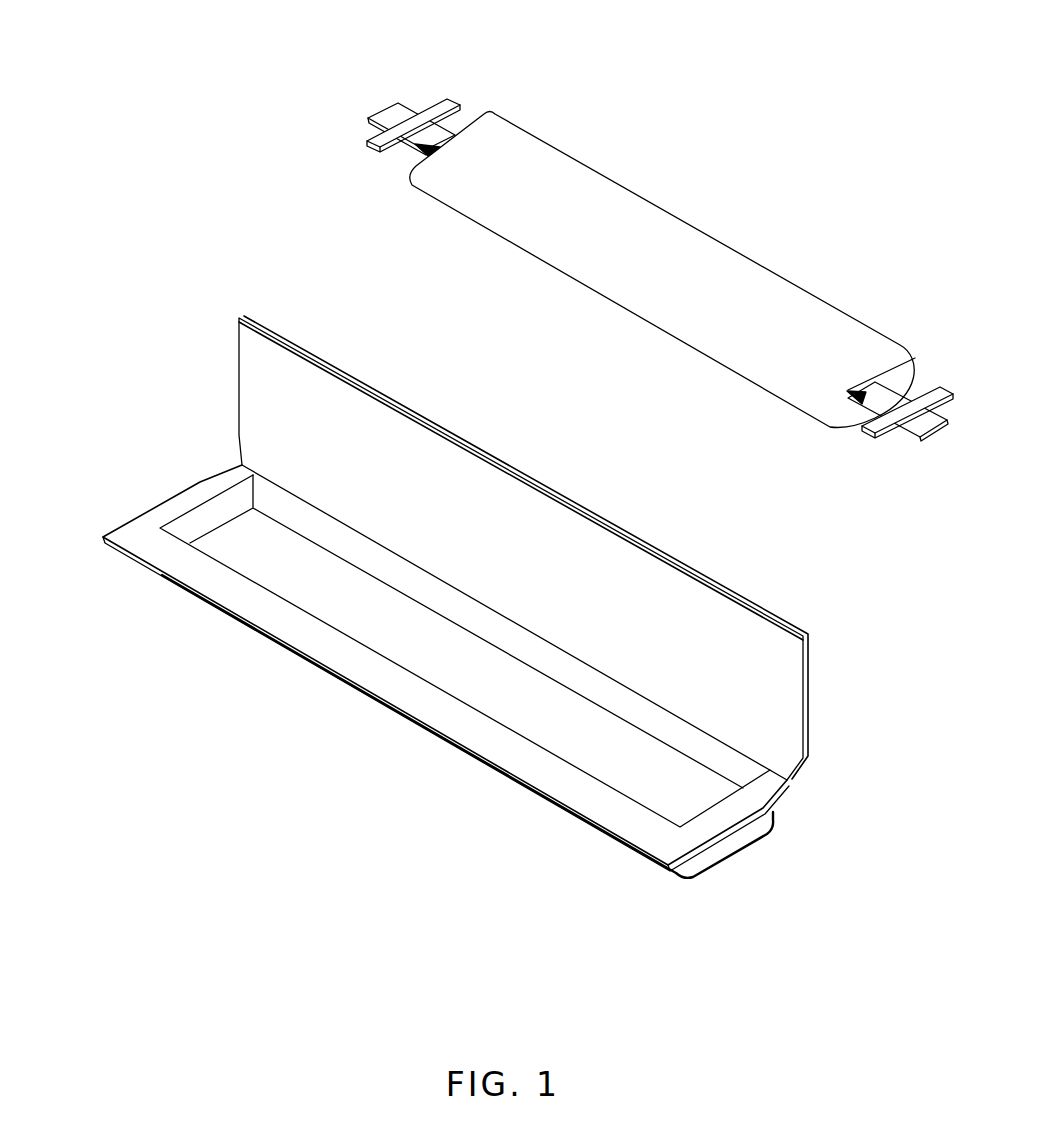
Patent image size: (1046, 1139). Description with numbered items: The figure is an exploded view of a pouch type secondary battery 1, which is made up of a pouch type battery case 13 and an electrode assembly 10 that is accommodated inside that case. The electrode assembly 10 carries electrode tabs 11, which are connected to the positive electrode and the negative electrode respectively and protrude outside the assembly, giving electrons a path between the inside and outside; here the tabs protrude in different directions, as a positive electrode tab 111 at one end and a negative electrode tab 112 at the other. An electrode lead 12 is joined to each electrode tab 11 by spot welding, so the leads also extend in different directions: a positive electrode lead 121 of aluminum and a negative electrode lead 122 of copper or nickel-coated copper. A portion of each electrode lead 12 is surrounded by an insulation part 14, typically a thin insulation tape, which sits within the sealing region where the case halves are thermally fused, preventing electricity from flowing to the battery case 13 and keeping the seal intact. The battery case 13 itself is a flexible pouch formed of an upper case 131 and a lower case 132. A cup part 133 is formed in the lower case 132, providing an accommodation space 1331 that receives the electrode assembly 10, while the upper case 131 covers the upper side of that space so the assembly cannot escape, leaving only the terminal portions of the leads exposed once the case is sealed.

The pouch type secondary battery 1 is at (297, 68).
The electrode assembly 10 is at (811, 150).
The electrode tab 11 is at (653, 98).
The positive electrode tab 111 is at (867, 383).
The negative electrode tab 112 is at (452, 141).
The electrode lead 12 is at (527, 338).
The positive electrode lead 121 is at (918, 432).
The negative electrode lead 122 is at (382, 120).
The battery case 13 is at (93, 339).
The upper case 131 is at (262, 375).
The lower case 132 is at (158, 514).
The cup part 133 is at (727, 850).
The accommodation space 1331 is at (670, 780).
The insulation part 14 is at (439, 110).